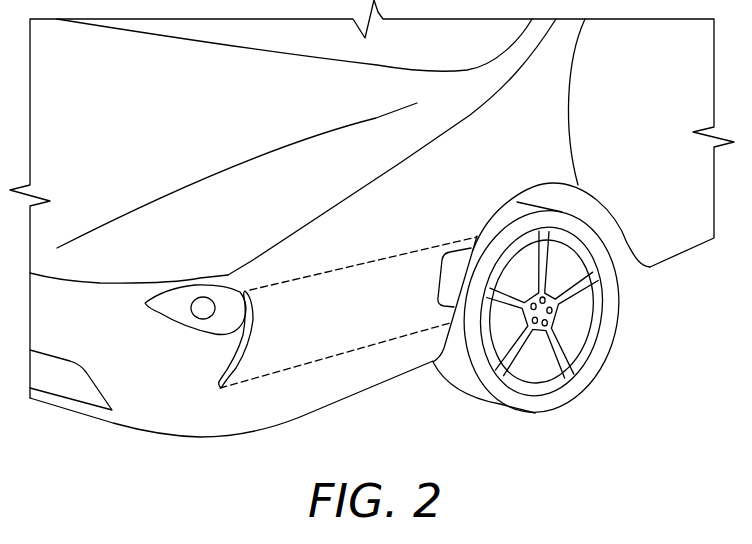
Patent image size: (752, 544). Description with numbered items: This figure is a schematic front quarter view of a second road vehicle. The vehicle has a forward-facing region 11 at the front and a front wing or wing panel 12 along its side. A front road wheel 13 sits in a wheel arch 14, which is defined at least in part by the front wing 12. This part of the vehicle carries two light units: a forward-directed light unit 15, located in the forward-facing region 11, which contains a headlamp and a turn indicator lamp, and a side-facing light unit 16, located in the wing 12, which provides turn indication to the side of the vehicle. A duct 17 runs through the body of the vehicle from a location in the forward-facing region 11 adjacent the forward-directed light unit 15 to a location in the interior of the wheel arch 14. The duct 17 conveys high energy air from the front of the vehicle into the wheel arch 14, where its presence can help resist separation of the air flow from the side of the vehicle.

The forward-facing region 11 is at (106, 452).
The front wing 12 is at (377, 378).
The front road wheel 13 is at (617, 313).
The wheel arch 14 is at (597, 208).
The forward-directed light unit 15 is at (172, 318).
The side-facing light unit 16 is at (438, 296).
The duct 17 is at (220, 390).